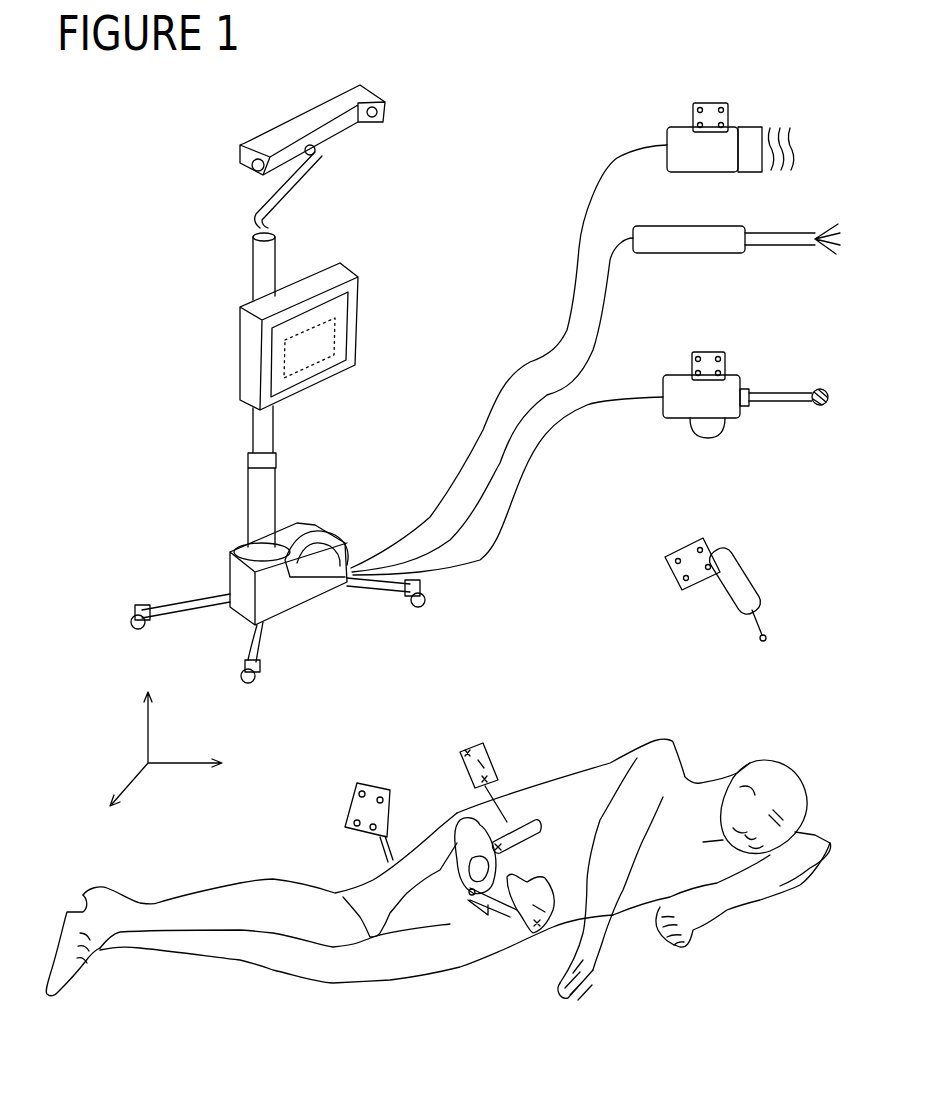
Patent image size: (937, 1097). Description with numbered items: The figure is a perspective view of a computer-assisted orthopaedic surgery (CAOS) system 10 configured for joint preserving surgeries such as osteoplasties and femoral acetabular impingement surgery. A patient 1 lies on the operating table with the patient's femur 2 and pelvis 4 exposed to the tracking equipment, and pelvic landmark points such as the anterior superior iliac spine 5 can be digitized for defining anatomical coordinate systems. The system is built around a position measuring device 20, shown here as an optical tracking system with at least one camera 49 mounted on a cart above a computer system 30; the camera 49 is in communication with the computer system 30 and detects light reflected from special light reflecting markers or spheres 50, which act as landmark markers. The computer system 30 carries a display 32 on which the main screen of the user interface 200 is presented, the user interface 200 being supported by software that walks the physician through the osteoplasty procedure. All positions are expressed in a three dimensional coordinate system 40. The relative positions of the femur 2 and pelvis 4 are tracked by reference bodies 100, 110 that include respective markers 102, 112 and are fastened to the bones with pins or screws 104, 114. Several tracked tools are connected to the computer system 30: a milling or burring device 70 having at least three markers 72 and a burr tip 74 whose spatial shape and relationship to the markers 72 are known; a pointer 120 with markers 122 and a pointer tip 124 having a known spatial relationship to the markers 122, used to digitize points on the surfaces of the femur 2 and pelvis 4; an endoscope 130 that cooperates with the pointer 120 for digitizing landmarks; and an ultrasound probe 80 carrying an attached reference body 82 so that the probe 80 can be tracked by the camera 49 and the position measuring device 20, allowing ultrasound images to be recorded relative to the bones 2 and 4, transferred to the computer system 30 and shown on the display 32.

The patient 1 is at (680, 750).
The femur 2 is at (516, 878).
The pelvis 4 is at (547, 827).
The anterior superior iliac spine 5 is at (537, 927).
The computer-assisted orthopaedic surgery (CAOS) system 10 is at (180, 326).
The position measuring device 20 is at (383, 135).
The computer system 30 is at (294, 458).
The display 32 is at (358, 335).
The three dimensional coordinate system 40 is at (166, 755).
The camera 49 is at (334, 124).
The light reflecting markers or spheres 50 is at (383, 110).
The milling or burring device 70 is at (722, 396).
The markers of burring device 72 is at (720, 351).
The burr tip (drill tip) 74 is at (818, 408).
The ultrasound probe 80 is at (708, 140).
The reference body of ultrasound probe 82 is at (722, 102).
The reference body (femur) 100 is at (368, 797).
The markers of femur reference body 102 is at (364, 782).
The pin or screw 104 is at (418, 821).
The reference body (pelvis) 110 is at (514, 748).
The markers of pelvis reference body 112 is at (478, 750).
The pin or screw 114 is at (530, 787).
The pointer 120 is at (693, 590).
The markers of pointer 122 is at (667, 558).
The pointer tip 124 is at (757, 639).
The endoscope 130 is at (752, 269).
The user interface 200 is at (280, 360).